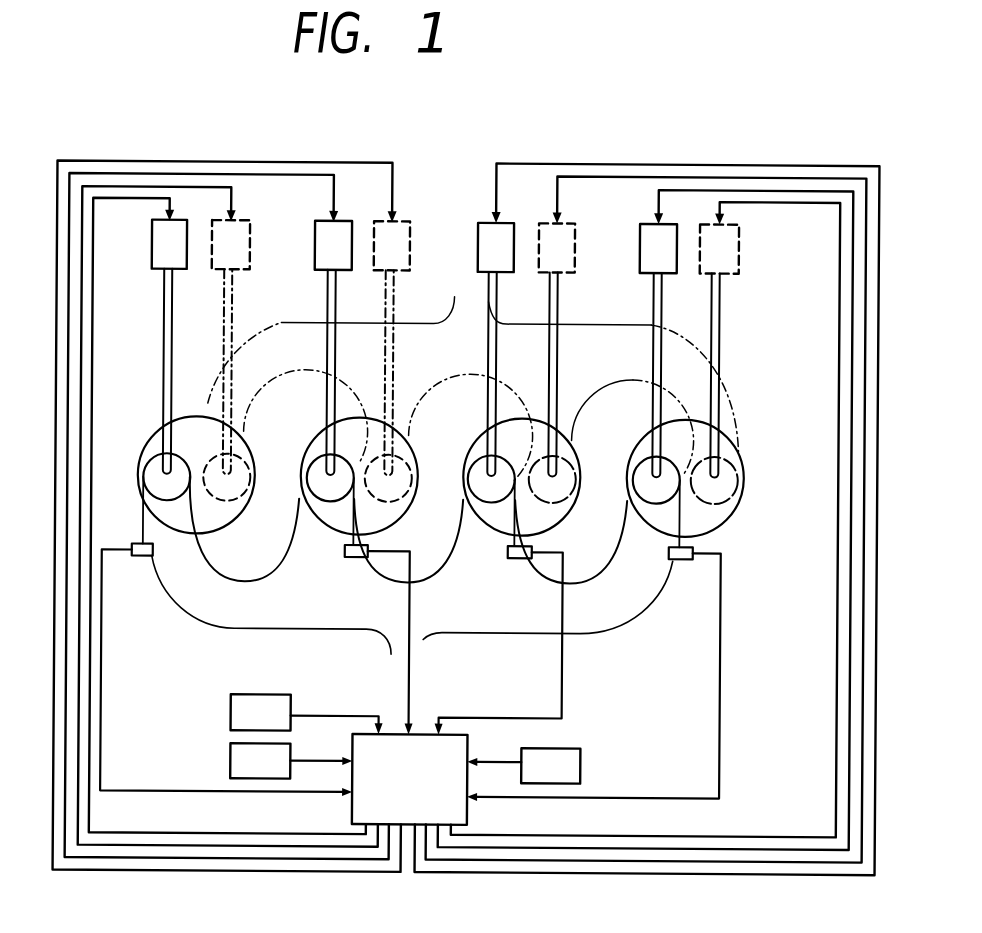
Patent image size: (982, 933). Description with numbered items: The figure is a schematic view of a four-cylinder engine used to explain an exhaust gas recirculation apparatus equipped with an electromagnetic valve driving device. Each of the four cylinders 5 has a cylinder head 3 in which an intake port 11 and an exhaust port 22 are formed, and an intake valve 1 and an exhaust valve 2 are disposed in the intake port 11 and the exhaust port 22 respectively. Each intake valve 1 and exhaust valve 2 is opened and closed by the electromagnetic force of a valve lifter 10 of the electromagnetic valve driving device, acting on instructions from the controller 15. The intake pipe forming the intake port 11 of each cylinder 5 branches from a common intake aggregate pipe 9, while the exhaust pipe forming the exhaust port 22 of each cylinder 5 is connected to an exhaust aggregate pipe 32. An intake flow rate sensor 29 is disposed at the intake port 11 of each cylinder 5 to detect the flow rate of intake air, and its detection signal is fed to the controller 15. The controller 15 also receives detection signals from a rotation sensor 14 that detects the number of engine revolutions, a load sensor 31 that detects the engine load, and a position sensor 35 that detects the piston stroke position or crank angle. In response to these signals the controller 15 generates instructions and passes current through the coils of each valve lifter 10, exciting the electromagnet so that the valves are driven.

The intake valve 1 is at (152, 472).
The exhaust valve 2 is at (233, 490).
The cylinder head 3 is at (208, 517).
The cylinder 5 is at (157, 430).
The intake aggregate pipe 9 is at (427, 641).
The valve lifter 10 is at (210, 271).
The intake port 11 is at (158, 510).
The rotation sensor 14 is at (232, 758).
The controller 15 is at (450, 735).
The exhaust port 22 is at (207, 427).
The intake flow rate sensor 29 is at (143, 558).
The load sensor 31 is at (222, 697).
The exhaust aggregate pipe 32 is at (470, 315).
The position sensor 35 is at (583, 763).